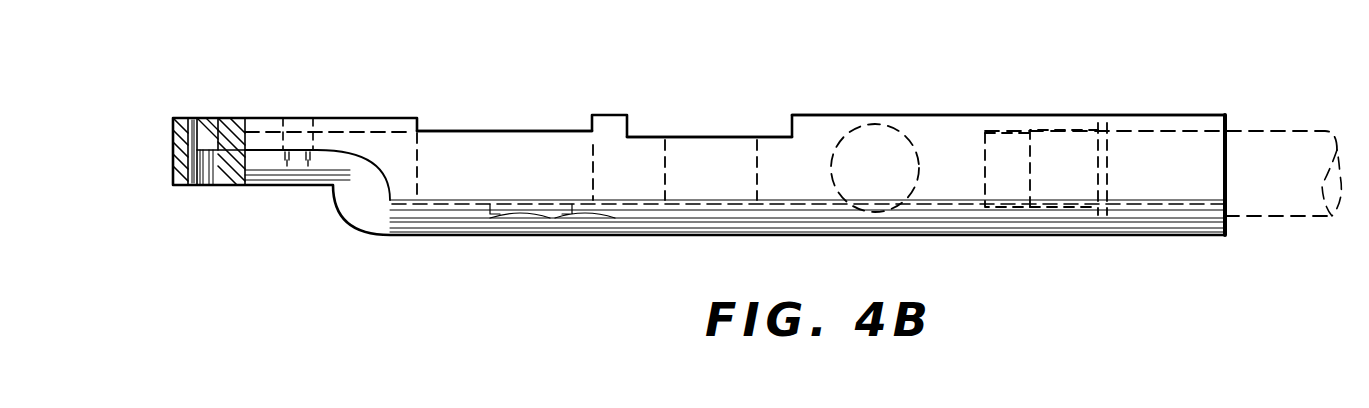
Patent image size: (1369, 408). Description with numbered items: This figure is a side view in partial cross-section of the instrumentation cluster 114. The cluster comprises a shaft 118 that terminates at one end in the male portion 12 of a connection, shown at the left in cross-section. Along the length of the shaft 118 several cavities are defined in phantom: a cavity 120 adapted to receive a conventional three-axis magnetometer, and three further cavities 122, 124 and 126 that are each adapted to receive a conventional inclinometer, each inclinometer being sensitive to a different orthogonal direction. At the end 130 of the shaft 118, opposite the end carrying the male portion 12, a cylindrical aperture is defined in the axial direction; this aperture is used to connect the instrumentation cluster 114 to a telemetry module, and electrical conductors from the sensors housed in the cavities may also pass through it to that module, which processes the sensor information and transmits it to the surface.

The male portion 12 is at (298, 117).
The instrumentation cluster 114 is at (790, 22).
The shaft 118 is at (970, 114).
The cavity 120 is at (512, 130).
The cavity 122 is at (712, 132).
The cavity 124 is at (876, 142).
The cavity 126 is at (1022, 126).
The end of shaft 130 is at (1194, 104).